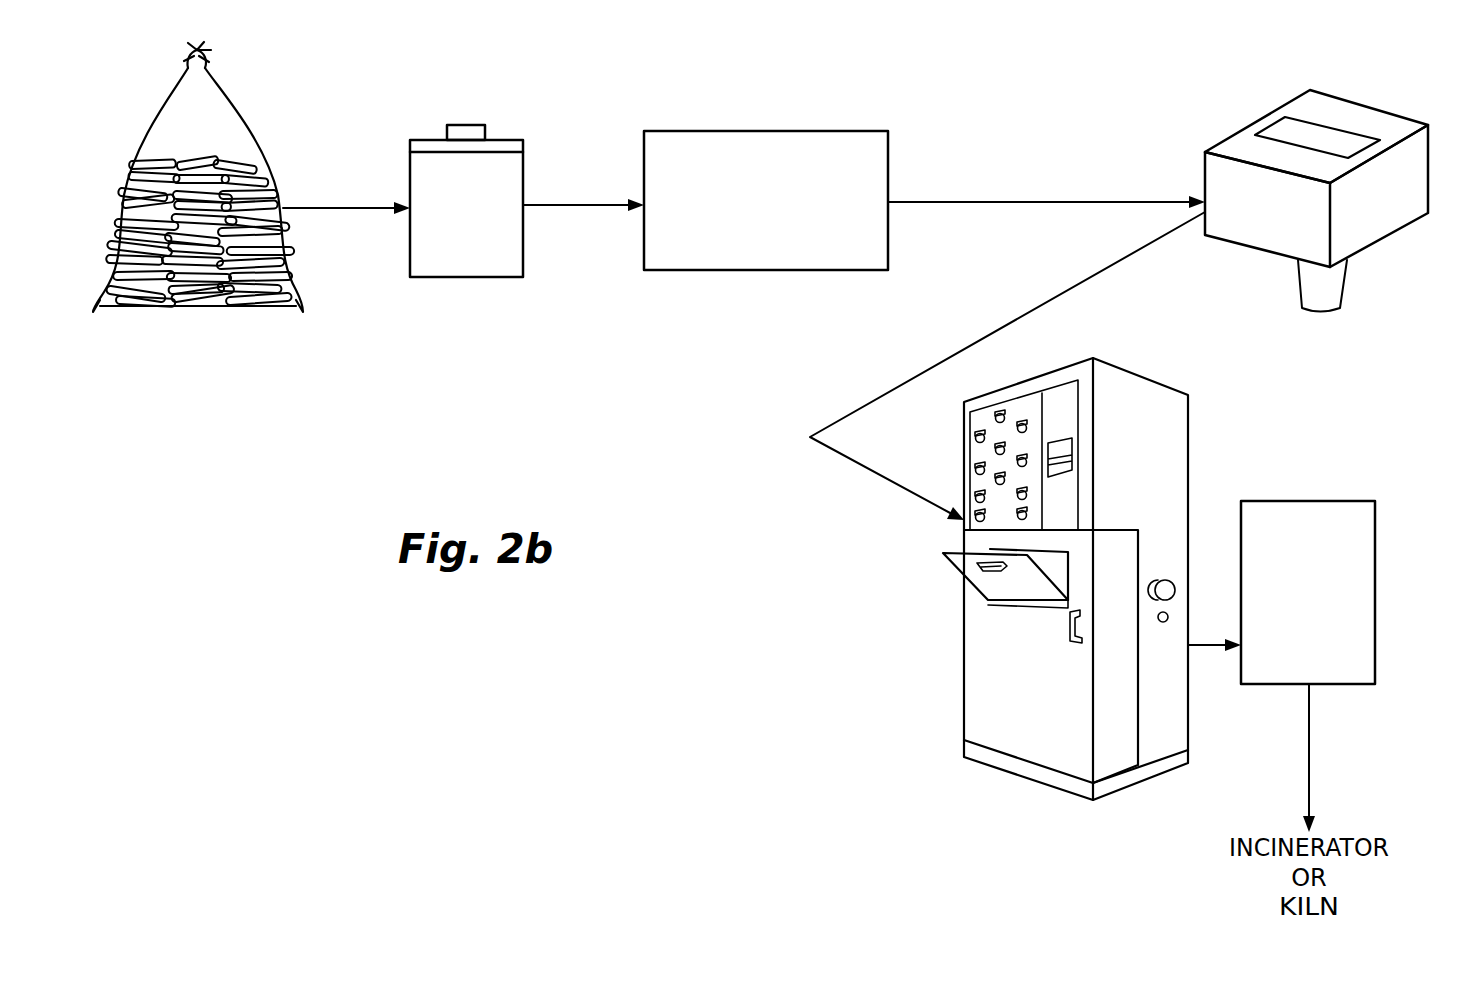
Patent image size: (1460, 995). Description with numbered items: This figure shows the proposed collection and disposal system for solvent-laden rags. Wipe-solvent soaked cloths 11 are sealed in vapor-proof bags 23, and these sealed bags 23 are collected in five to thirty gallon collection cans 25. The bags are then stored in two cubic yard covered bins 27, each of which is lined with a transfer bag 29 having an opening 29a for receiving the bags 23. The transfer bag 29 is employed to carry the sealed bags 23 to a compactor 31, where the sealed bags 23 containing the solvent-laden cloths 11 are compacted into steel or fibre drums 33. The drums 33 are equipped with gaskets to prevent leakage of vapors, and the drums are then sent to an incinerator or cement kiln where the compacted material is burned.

The solvent-laden cloths 11 is at (263, 283).
The vapor-proof bags 23 is at (108, 236).
The collection cans 25 is at (515, 168).
The covered bins 27 is at (793, 142).
The transfer bag 29 is at (1312, 177).
The opening 29a is at (1273, 130).
The compactor 31 is at (980, 688).
The steel or fibre drums 33 is at (1380, 460).